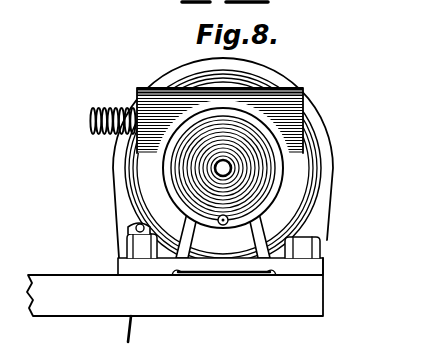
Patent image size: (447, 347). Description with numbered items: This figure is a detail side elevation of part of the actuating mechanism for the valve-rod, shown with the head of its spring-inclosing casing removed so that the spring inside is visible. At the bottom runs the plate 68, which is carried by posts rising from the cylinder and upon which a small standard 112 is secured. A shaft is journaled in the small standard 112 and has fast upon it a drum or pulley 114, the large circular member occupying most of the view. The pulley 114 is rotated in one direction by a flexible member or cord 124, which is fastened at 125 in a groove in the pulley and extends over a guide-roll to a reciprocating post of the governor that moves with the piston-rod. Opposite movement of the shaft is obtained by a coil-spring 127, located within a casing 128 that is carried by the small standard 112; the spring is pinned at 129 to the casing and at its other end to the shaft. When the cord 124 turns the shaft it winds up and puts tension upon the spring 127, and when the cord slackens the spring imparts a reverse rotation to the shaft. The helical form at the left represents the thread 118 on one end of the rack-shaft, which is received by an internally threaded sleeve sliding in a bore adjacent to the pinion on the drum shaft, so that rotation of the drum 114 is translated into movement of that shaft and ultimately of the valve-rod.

The plate 68 is at (324, 295).
The small standard 112 is at (265, 228).
The drum or pulley 114 is at (316, 118).
The thread 118 is at (136, 99).
The flexible member or cord 124 is at (128, 223).
The fastening point of the cord 125 is at (134, 229).
The coil-spring 127 is at (262, 170).
The casing 128 is at (290, 184).
The pin 129 is at (223, 225).